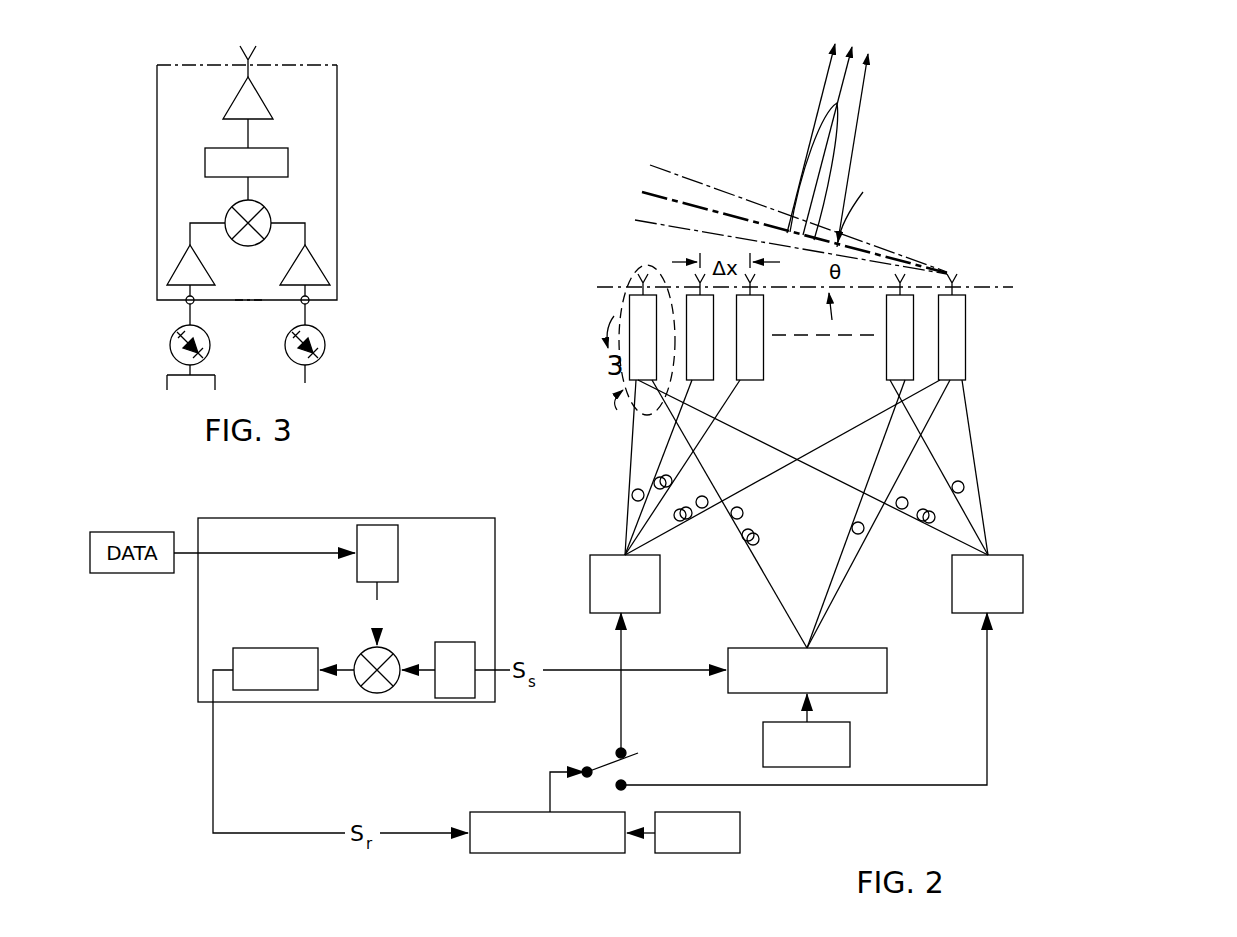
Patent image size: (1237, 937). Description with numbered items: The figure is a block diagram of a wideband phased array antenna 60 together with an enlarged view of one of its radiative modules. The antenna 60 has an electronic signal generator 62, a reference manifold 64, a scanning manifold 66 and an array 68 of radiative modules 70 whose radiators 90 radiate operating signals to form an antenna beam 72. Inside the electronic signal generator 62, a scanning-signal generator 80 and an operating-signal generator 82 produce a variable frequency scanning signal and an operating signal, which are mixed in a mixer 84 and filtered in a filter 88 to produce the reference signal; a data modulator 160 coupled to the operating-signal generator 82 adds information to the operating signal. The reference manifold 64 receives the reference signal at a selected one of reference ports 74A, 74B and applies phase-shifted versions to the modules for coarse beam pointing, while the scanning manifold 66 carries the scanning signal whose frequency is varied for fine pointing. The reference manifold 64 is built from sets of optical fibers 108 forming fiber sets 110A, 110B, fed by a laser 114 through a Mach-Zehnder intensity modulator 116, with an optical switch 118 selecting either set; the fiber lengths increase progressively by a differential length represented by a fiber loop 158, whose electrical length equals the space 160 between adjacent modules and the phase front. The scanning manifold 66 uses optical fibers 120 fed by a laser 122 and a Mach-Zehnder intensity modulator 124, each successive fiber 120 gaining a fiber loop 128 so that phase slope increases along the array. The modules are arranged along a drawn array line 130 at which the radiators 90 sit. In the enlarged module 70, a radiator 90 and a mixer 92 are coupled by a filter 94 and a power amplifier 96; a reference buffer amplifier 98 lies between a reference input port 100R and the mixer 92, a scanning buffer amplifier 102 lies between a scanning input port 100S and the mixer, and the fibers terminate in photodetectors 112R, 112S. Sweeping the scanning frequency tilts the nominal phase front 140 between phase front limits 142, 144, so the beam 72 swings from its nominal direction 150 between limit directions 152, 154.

In FIG. 2, the wideband phased array antenna 60 is at (1052, 298).
In FIG. 2, the electronic signal generator 62 is at (482, 516).
In FIG. 2, the reference manifold 64 is at (982, 448).
In FIG. 2, the scanning manifold 66 is at (917, 630).
In FIG. 2, the array 68 is at (619, 269).
In FIG. 3, the radiative module 70 is at (155, 103).
In FIG. 2, the radiative module 70 is at (629, 310).
In FIG. 2, the antenna beam 72 is at (800, 163).
In FIG. 2, the reference port 74A is at (660, 575).
In FIG. 2, the reference port 74B is at (1023, 575).
In FIG. 2, the scanning-signal generator 80 is at (436, 650).
In FIG. 2, the operating-signal generator 82 is at (400, 553).
In FIG. 2, the mixer 84 is at (356, 655).
In FIG. 2, the filter 88 is at (232, 668).
In FIG. 3, the radiator 90 is at (255, 47).
In FIG. 2, the radiator 90 is at (956, 283).
In FIG. 3, the mixer 92 is at (232, 205).
In FIG. 3, the filter 94 is at (289, 166).
In FIG. 3, the power amplifier 96 is at (263, 97).
In FIG. 3, the reference buffer amplifier 98 is at (170, 268).
In FIG. 3, the reference input port 100R is at (186, 306).
In FIG. 3, the scanning input port 100S is at (309, 305).
In FIG. 3, the scanning buffer amplifier 102 is at (325, 268).
In FIG. 3, the optical fibers 108 is at (160, 383).
In FIG. 2, the optical fibers 108 is at (630, 428).
In FIG. 2, the optical fiber set 110A is at (619, 520).
In FIG. 2, the optical fiber set 110B is at (982, 520).
In FIG. 3, the photodetector 112R is at (171, 338).
In FIG. 3, the photodetector 112S is at (325, 350).
In FIG. 2, the laser 114 is at (740, 834).
In FIG. 2, the Mach-Zehnder intensity modulator 116 is at (505, 853).
In FIG. 2, the optical switch 118 is at (587, 764).
In FIG. 3, the optical fibers 120 is at (312, 380).
In FIG. 2, the optical fibers 120 is at (850, 572).
In FIG. 2, the laser 122 is at (850, 745).
In FIG. 2, the Mach-Zehnder intensity modulator 124 is at (887, 668).
In FIG. 2, the fiber loop 128 is at (846, 548).
In FIG. 2, the array axis 130 is at (1003, 288).
In FIG. 2, the nominal phase front 140 is at (642, 192).
In FIG. 2, the phase front limit 142 is at (635, 220).
In FIG. 2, the phase front limit 144 is at (650, 165).
In FIG. 2, the nominal direction 150 is at (850, 70).
In FIG. 2, the limit direction 152 is at (818, 104).
In FIG. 2, the limit direction 154 is at (848, 112).
In FIG. 2, the fiber loop 158 is at (640, 478).
In FIG. 2, the space 160 is at (900, 278).